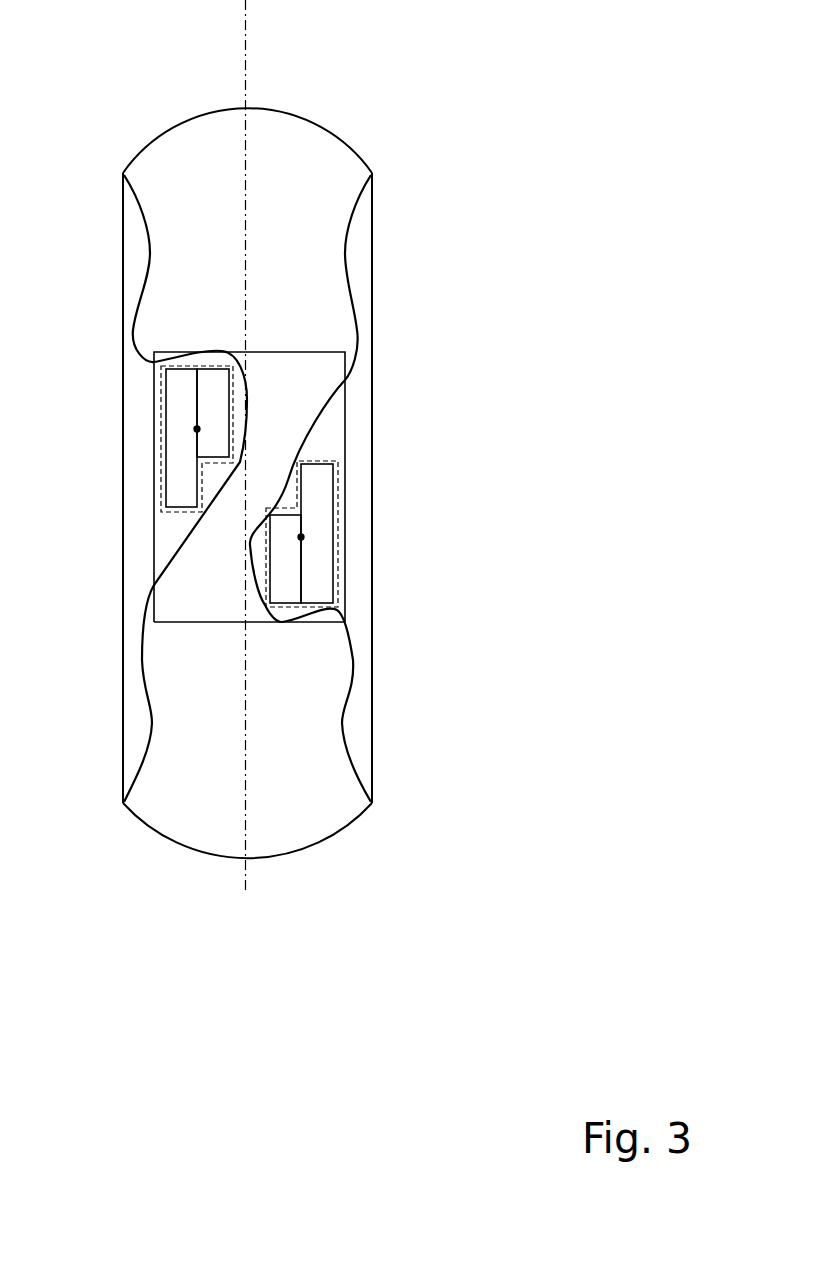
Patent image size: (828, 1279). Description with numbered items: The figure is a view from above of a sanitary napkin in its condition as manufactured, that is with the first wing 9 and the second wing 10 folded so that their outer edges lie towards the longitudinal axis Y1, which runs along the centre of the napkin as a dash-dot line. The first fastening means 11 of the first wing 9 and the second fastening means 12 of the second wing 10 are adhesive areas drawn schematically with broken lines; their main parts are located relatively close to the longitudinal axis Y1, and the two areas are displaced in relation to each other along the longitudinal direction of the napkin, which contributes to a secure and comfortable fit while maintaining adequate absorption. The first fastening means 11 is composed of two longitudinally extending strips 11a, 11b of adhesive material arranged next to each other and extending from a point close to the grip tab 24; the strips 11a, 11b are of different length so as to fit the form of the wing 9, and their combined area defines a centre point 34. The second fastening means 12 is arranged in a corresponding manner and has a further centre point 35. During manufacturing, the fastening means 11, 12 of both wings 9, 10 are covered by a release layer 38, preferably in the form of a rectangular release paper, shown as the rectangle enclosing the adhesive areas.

The first wing 9 is at (190, 542).
The second wing 10 is at (299, 438).
The first fastening means 11 is at (162, 392).
The longitudinally extending strip 11a is at (179, 375).
The longitudinally extending strip 11b is at (217, 375).
The second fastening means 12 is at (338, 533).
The grip tab 24 is at (233, 352).
The centre point 34 is at (197, 429).
The further centre point 35 is at (301, 537).
The release layer 38 is at (197, 623).
The longitudinal axis Y1 is at (245, 27).